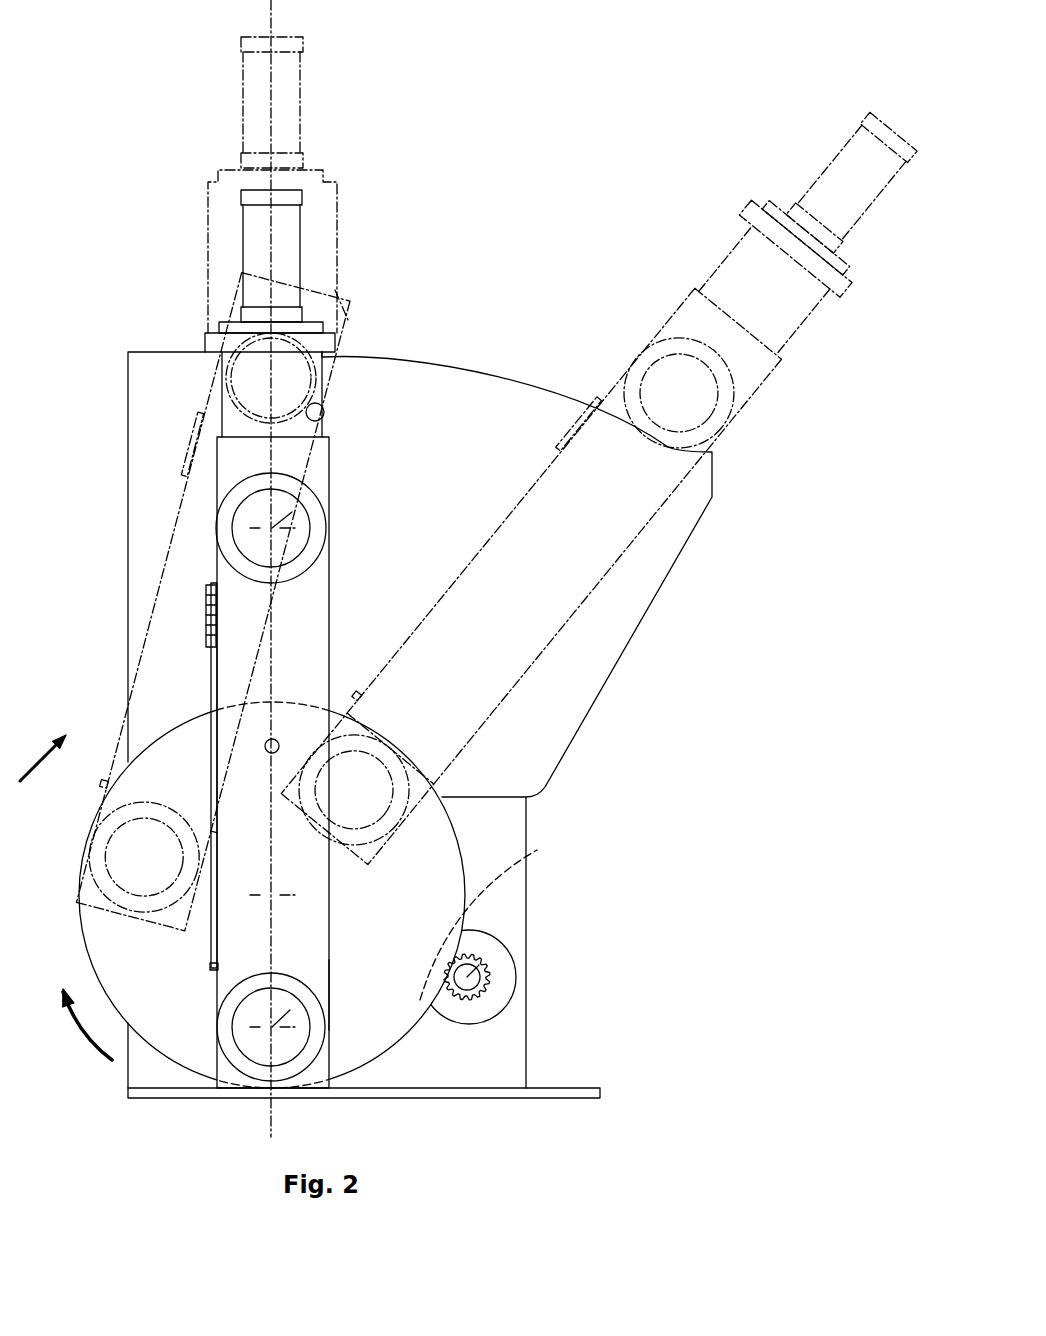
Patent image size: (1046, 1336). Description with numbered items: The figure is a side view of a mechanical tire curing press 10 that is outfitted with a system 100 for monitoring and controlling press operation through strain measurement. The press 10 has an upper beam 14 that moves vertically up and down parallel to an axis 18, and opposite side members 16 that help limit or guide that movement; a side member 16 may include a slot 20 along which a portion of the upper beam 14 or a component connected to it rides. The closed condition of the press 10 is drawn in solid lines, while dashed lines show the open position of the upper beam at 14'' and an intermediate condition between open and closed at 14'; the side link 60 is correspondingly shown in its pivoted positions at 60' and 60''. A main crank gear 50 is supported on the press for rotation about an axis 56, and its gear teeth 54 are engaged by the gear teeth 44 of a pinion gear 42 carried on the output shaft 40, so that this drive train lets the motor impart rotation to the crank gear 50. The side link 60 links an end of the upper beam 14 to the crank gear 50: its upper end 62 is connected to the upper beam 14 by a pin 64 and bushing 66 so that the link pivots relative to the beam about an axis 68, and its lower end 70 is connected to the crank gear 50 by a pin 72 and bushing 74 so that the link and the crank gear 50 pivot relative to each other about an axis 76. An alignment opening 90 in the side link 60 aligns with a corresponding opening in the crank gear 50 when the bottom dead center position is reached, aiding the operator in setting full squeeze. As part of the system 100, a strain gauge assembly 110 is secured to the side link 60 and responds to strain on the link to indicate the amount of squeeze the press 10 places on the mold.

The press 10 is at (118, 246).
The upper beam 14 is at (300, 313).
The intermediate position of upper beam 14' is at (306, 185).
The open position of upper beam 14'' is at (851, 182).
The side member 16 is at (165, 455).
The axis 18 is at (272, 1127).
The slot 20 is at (320, 408).
The output shaft 40 is at (480, 960).
The pinion gear 42 is at (490, 982).
The gear teeth 44 is at (473, 952).
The main crank gear 50 is at (150, 950).
The gear teeth 54 is at (498, 917).
The axis 56 is at (144, 857).
The side link 60 is at (246, 666).
The carrier column in first pivoted position 60' is at (204, 601).
The carrier column in second pivoted position 60'' is at (605, 481).
The upper end 62 is at (305, 465).
The pin 64 is at (288, 537).
The bushing 66 is at (303, 558).
The axis 68 is at (313, 500).
The lower end 70 is at (322, 1065).
The pin 72 is at (255, 1047).
The bushing 74 is at (233, 1003).
The axis 76 is at (330, 992).
The alignment opening 90 is at (265, 752).
The system 100 is at (35, 770).
The strain gauge assembly 110 is at (184, 611).